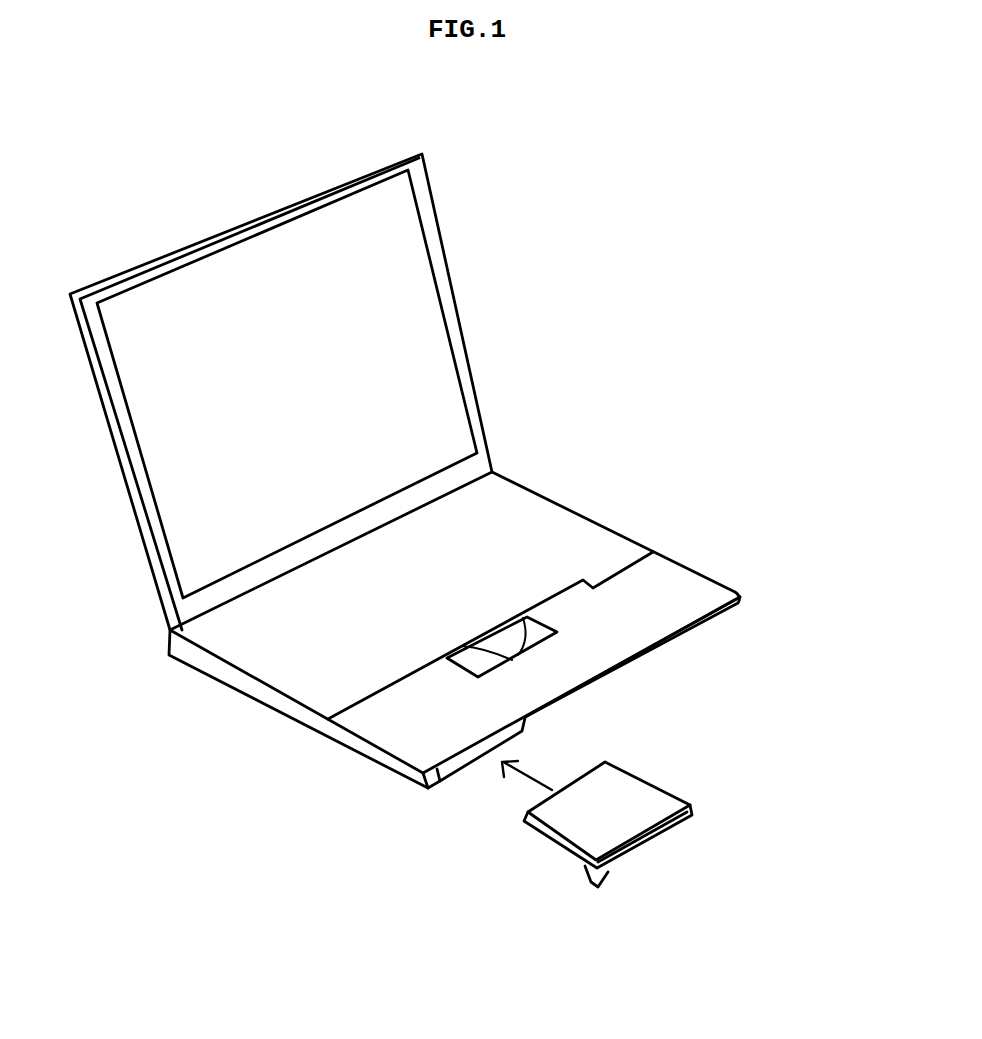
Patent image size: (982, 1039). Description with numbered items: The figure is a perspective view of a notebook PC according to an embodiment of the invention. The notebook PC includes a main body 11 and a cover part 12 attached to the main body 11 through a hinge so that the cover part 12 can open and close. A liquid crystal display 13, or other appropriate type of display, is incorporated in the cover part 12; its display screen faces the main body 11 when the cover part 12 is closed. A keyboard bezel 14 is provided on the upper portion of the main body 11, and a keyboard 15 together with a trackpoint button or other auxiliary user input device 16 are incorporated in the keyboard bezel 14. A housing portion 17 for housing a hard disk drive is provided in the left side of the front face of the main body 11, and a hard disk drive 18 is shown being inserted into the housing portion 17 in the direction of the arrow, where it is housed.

The main body 11 is at (257, 692).
The cover part 12 is at (435, 225).
The liquid crystal display 13 is at (395, 348).
The keyboard bezel 14 is at (687, 575).
The keyboard 15 is at (537, 527).
The auxiliary user input device 16 is at (540, 643).
The housing portion 17 is at (468, 753).
The hard disk drive 18 is at (643, 780).